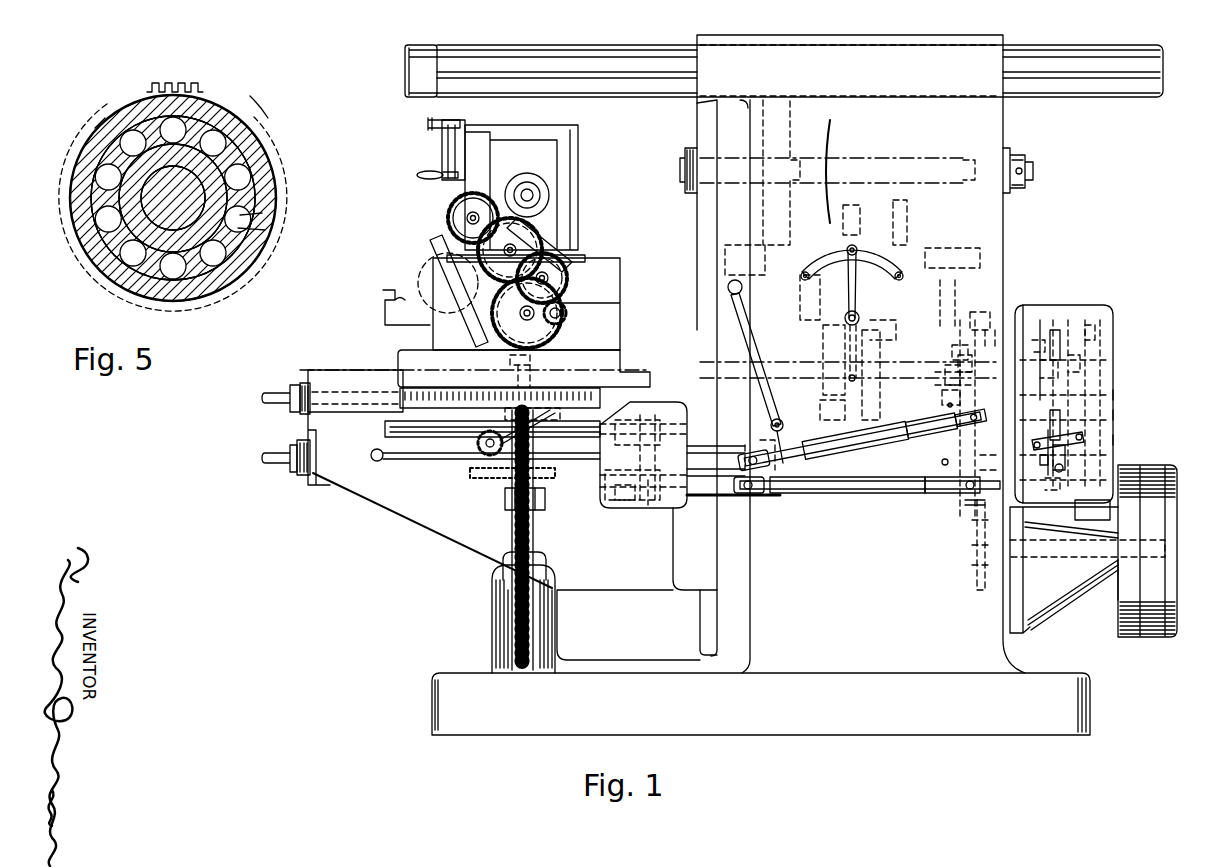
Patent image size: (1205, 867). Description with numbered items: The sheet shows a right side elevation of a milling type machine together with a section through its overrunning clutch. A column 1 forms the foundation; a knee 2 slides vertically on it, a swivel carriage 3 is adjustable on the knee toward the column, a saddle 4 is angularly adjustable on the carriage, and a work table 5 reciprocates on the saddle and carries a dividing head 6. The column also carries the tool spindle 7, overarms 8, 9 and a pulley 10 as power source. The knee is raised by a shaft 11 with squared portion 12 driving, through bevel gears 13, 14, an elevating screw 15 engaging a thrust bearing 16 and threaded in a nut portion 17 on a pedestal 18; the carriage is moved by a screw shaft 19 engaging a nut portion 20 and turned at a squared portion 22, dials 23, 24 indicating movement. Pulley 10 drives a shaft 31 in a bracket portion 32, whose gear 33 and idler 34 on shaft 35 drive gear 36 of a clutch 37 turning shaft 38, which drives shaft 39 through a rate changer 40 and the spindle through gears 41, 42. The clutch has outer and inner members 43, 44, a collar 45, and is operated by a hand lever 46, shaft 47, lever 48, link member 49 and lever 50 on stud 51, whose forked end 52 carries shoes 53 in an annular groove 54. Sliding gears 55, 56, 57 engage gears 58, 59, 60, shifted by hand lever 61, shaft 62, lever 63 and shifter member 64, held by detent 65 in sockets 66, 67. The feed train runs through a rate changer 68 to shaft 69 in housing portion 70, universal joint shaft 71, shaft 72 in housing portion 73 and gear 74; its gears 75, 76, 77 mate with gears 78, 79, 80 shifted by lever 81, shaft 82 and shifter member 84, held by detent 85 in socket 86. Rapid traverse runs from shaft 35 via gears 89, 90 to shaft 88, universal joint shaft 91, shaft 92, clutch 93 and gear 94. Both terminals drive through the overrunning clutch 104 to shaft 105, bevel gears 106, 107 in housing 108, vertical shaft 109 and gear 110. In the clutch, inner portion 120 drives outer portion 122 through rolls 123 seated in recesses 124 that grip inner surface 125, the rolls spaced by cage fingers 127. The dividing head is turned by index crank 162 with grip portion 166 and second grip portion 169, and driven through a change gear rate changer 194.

In FIG. 1, the column 1 is at (1005, 212).
In FIG. 1, the knee 2 is at (402, 512).
In FIG. 1, the swivel carriage 3 is at (612, 362).
In FIG. 1, the saddle 4 is at (615, 320).
In FIG. 1, the work table 5 is at (616, 276).
In FIG. 1, the dividing head 6 is at (587, 147).
In FIG. 1, the tool spindle 7 is at (690, 192).
In FIG. 1, the overarm 8 is at (437, 48).
In FIG. 1, the overarm 9 is at (516, 50).
In FIG. 1, the pulley 10 is at (1130, 622).
In FIG. 1, the shaft 11 is at (346, 463).
In FIG. 1, the squared portion 12 is at (266, 466).
In FIG. 1, the bevel gear 13 is at (480, 478).
In FIG. 1, the bevel gear 14 is at (490, 490).
In FIG. 1, the elevating screw 15 is at (512, 530).
In FIG. 1, the thrust bearing 16 is at (544, 495).
In FIG. 1, the nut portion 17 is at (547, 572).
In FIG. 1, the pedestal 18 is at (556, 622).
In FIG. 1, the screw shaft 19 is at (345, 400).
In FIG. 1, the nut portion 20 is at (470, 420).
In FIG. 1, the squared portion 22 is at (290, 390).
In FIG. 1, the dial 23 is at (306, 383).
In FIG. 1, the dial 24 is at (298, 442).
In FIG. 1, the shaft 31 is at (1050, 553).
In FIG. 1, the bracket portion 32 is at (1050, 598).
In FIG. 1, the gear 33 is at (975, 527).
In FIG. 1, the idler 34 is at (970, 500).
In FIG. 1, the shaft 35 is at (985, 460).
In FIG. 1, the gear 36 is at (982, 312).
In FIG. 1, the clutch 37 is at (965, 330).
In FIG. 1, the shaft 38 is at (875, 376).
In FIG. 1, the shaft 39 is at (972, 252).
In FIG. 1, the rate changer 40 is at (821, 306).
In FIG. 1, the gear 41 is at (770, 276).
In FIG. 1, the gear 42 is at (775, 216).
In FIG. 1, the outer clutch member 43 is at (990, 330).
In FIG. 1, the inner clutch member 44 is at (960, 345).
In FIG. 1, the collar 45 is at (1000, 295).
In FIG. 1, the hand lever 46 is at (728, 288).
In FIG. 1, the shaft 47 is at (783, 425).
In FIG. 1, the lever 48 is at (772, 438).
In FIG. 1, the link member 49 is at (944, 458).
In FIG. 1, the lever 50 is at (945, 395).
In FIG. 1, the stud 51 is at (948, 407).
In FIG. 1, the forked end 52 is at (945, 376).
In FIG. 1, the shoes 53 is at (950, 366).
In FIG. 1, the annular groove 54 is at (962, 355).
In FIG. 1, the gear 55 is at (836, 332).
In FIG. 1, the gear 56 is at (845, 385).
In FIG. 1, the gear 57 is at (882, 335).
In FIG. 1, the gear 58 is at (803, 300).
In FIG. 1, the gear 59 is at (855, 210).
In FIG. 1, the gear 60 is at (905, 216).
In FIG. 1, the hand lever 61 is at (845, 300).
In FIG. 1, the shaft 62 is at (858, 312).
In FIG. 1, the lever 63 is at (868, 345).
In FIG. 1, the shifter member 64 is at (870, 365).
In FIG. 1, the detent 65 is at (853, 246).
In FIG. 1, the socket 66 is at (803, 270).
In FIG. 1, the socket 67 is at (905, 270).
In FIG. 1, the rate changer 68 is at (1093, 349).
In FIG. 1, the shaft 69 is at (1108, 416).
In FIG. 1, the housing portion 70 is at (1110, 396).
In FIG. 1, the extensible universal joint shaft 71 is at (878, 436).
In FIG. 1, the shaft 72 is at (703, 465).
In FIG. 1, the housing portion 73 is at (686, 512).
In FIG. 1, the gear 74 is at (700, 444).
In FIG. 1, the gear 75 is at (1040, 320).
In FIG. 1, the gear 76 is at (1056, 330).
In FIG. 1, the gear 77 is at (1090, 325).
In FIG. 1, the gear 78 is at (1038, 340).
In FIG. 1, the gear 79 is at (1050, 362).
In FIG. 1, the gear 80 is at (1078, 364).
In FIG. 1, the lever 81 is at (1047, 468).
In FIG. 1, the shaft 82 is at (1055, 483).
In FIG. 1, the shifter member 84 is at (1058, 410).
In FIG. 1, the detent 85 is at (1062, 436).
In FIG. 1, the socket 86 is at (1040, 458).
In FIG. 1, the shaft 88 is at (1120, 487).
In FIG. 1, the gear 89 is at (1105, 440).
In FIG. 1, the gear 90 is at (1110, 510).
In FIG. 1, the extensible universal joint shaft 91 is at (848, 504).
In FIG. 1, the shaft 92 is at (702, 498).
In FIG. 1, the clutch 93 is at (630, 502).
In FIG. 1, the gear 94 is at (652, 510).
In FIG. 5, the overrunning clutch 104 is at (95, 128).
In FIG. 1, the overrunning clutch 104 is at (660, 405).
In FIG. 5, the shaft 105 is at (258, 250).
In FIG. 1, the bevel gear 106 is at (535, 445).
In FIG. 1, the bevel gear 107 is at (540, 420).
In FIG. 1, the housing 108 is at (540, 432).
In FIG. 1, the vertical shaft 109 is at (535, 376).
In FIG. 1, the gear 110 is at (535, 360).
In FIG. 5, the inner clutch portion 120 is at (262, 145).
In FIG. 5, the outer clutch portion 122 is at (258, 150).
In FIG. 5, the rolls 123 is at (245, 170).
In FIG. 5, the recess 124 is at (250, 188).
In FIG. 5, the inner surface 125 is at (255, 203).
In FIG. 5, the fingers 127 is at (262, 235).
In FIG. 1, the index crank 162 is at (445, 135).
In FIG. 1, the grip portion 166 is at (430, 120).
In FIG. 1, the second grip portion 169 is at (432, 170).
In FIG. 1, the rate changer 194 is at (555, 238).